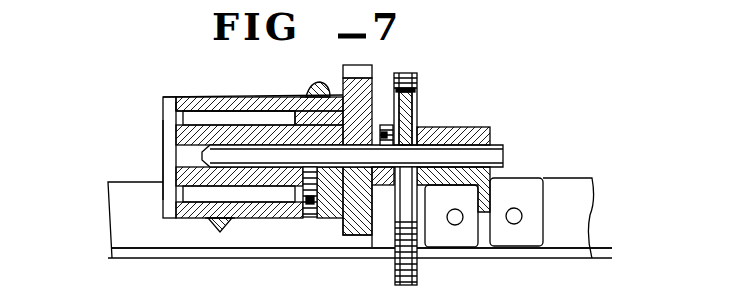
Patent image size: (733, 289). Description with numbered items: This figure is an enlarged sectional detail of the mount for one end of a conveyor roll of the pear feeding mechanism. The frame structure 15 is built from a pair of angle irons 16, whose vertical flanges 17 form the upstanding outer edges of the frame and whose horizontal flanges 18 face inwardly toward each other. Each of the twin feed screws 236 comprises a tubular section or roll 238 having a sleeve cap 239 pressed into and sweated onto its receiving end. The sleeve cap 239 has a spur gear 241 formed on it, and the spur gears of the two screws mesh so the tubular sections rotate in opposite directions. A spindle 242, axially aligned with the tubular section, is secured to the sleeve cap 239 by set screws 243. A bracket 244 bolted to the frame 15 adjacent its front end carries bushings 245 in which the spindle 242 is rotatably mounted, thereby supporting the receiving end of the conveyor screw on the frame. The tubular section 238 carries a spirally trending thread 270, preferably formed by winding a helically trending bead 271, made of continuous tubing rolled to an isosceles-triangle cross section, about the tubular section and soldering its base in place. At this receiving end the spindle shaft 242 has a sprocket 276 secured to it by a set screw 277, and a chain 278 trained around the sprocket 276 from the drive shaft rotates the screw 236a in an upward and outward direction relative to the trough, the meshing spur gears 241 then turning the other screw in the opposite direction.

The frame structure 15 is at (588, 239).
The angle irons 16 is at (125, 237).
The flanges 17 is at (130, 197).
The flanges 18 is at (244, 252).
The feed screws 236 is at (163, 96).
The screw 236a is at (170, 154).
The tubular section 238 is at (183, 106).
The sleeve cap 239 is at (195, 110).
The spur gear 241 is at (362, 68).
The spindle 242 is at (370, 163).
The set screws 243 is at (311, 204).
The bracket 244 is at (518, 186).
The bushings 245 is at (466, 131).
The spirally trending thread 270 is at (308, 91).
The helically trending bead 271 is at (324, 84).
The sprocket 276 is at (405, 112).
The set screw 277 is at (381, 130).
The chain 278 is at (395, 277).